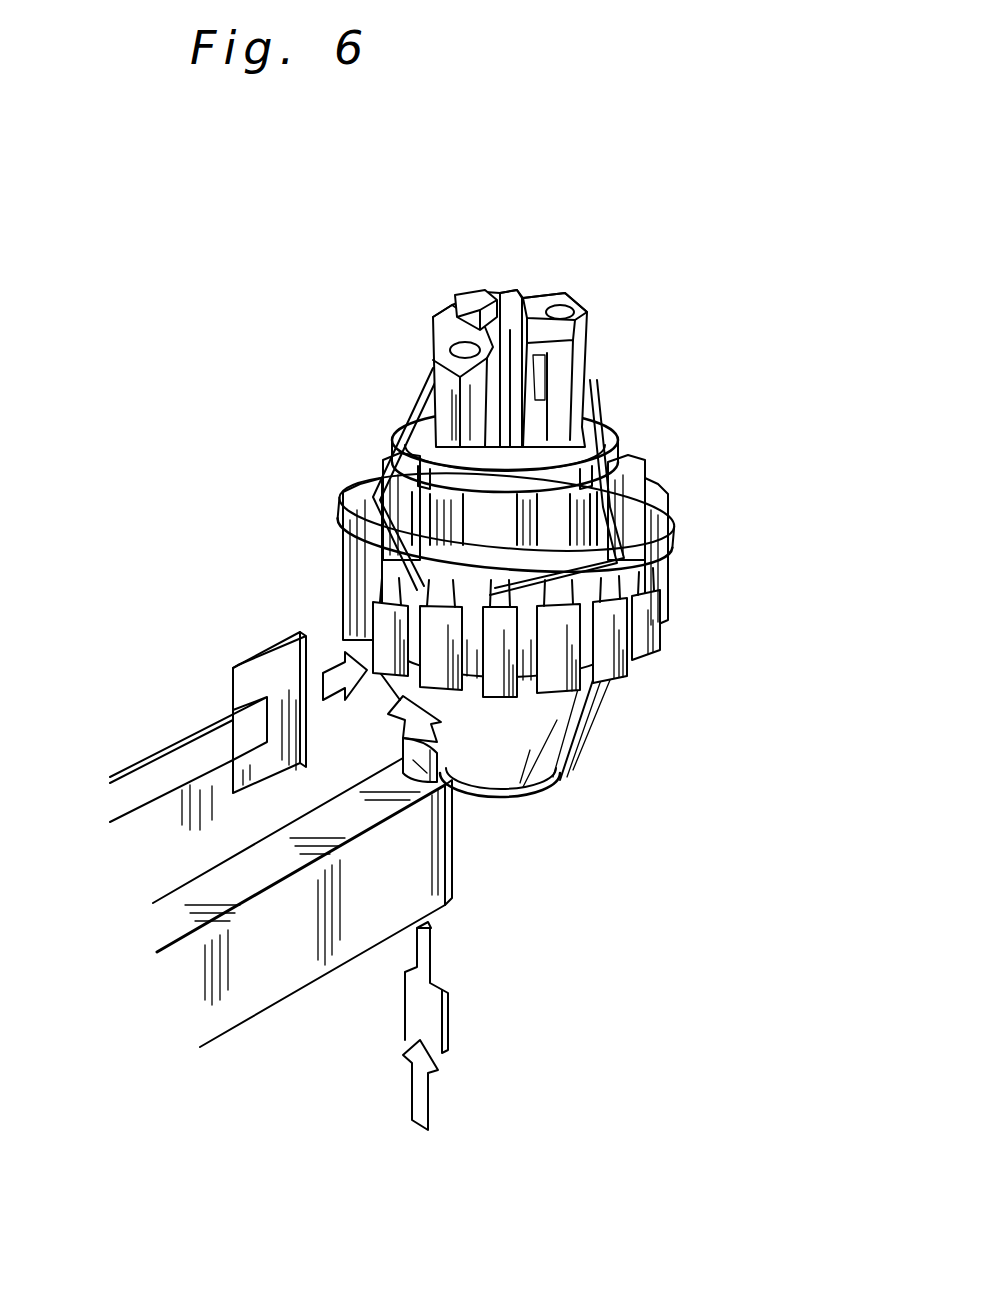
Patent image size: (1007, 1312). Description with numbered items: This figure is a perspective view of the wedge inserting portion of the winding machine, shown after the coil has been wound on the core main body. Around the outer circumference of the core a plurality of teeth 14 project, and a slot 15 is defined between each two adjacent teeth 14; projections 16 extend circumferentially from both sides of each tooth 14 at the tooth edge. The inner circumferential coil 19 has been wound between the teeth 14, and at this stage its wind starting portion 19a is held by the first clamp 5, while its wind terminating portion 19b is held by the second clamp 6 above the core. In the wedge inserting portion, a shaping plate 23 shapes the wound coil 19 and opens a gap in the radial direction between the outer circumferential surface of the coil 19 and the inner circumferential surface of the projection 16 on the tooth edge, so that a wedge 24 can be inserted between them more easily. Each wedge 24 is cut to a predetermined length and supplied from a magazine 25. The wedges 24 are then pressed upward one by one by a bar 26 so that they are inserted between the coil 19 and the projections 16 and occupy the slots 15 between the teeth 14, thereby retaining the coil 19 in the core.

The first clamp 5 is at (534, 322).
The second clamp 6 is at (458, 328).
The teeth 14 is at (373, 567).
The slot 15 is at (620, 655).
The projections 16 is at (460, 610).
The inner circumferential coil 19 is at (502, 440).
The wind starting portion 19a is at (588, 357).
The wind terminating portion 19b is at (420, 383).
The shaping plate 23 is at (267, 670).
The wedge 24 is at (448, 782).
The magazine 25 is at (265, 977).
The bar 26 is at (427, 1010).